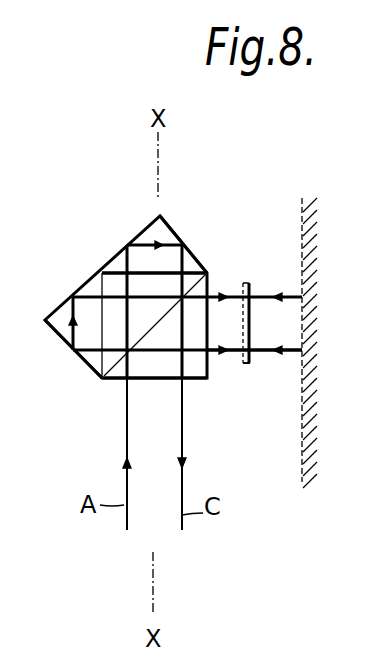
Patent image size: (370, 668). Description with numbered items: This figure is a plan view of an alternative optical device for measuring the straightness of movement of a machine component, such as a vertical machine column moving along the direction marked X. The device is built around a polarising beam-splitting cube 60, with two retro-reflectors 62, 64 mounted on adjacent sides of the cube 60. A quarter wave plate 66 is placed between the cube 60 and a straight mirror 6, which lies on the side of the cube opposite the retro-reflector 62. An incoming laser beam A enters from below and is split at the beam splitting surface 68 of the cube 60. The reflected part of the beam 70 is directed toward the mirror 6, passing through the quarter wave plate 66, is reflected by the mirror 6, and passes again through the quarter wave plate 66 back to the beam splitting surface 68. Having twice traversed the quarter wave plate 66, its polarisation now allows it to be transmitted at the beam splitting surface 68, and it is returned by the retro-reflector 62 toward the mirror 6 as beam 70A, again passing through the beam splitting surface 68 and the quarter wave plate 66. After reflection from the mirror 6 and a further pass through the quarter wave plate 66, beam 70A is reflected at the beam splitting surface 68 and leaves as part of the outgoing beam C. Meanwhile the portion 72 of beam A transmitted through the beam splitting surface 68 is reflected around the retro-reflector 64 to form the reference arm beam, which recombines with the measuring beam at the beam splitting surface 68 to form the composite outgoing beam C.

The straight mirror 6 is at (308, 213).
The polarising beam-splitting cube 60 is at (206, 290).
The retro-reflector 62 is at (60, 329).
The retro-reflector 64 is at (167, 227).
The quarter wave plate 66 is at (250, 366).
The beam splitting surface 68 is at (117, 373).
The reflected part of the beam 70 is at (213, 355).
The beam 70A is at (233, 294).
The portion of the incoming beam 72 is at (123, 305).